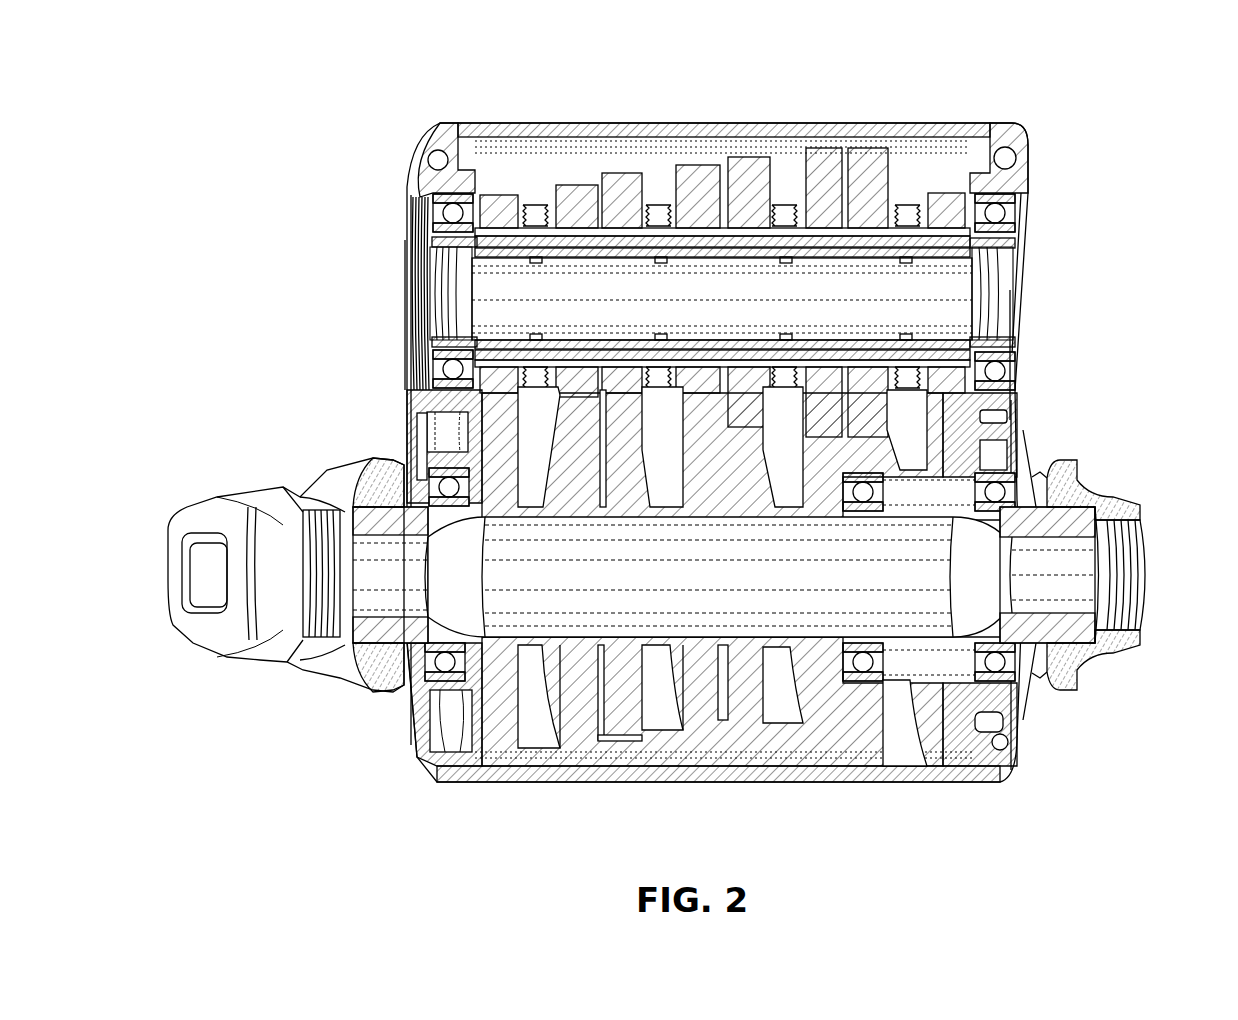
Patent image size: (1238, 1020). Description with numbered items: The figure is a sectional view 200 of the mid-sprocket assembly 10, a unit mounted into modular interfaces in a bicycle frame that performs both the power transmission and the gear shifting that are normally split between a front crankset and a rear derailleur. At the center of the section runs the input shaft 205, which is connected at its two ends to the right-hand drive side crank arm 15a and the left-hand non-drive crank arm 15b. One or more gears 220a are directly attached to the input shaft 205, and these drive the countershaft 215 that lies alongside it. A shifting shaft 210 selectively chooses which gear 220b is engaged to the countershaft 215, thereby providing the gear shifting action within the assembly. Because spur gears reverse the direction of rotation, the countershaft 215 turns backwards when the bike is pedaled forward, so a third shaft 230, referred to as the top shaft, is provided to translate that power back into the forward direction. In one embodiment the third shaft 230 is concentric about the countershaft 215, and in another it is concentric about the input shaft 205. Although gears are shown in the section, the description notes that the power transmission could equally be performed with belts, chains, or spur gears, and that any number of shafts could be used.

The sectional view 200 is at (653, 429).
The mid-sprocket assembly 10 is at (433, 773).
The right-hand drive side crank arm 15a is at (1123, 494).
The left-hand non-drive crank arm 15b is at (183, 503).
The input shaft 205 is at (1017, 640).
The shifting shaft 210 is at (410, 257).
The countershaft 215 is at (435, 312).
The gears 220a is at (823, 690).
The gear 220b is at (578, 193).
The third shaft 230 is at (1016, 293).